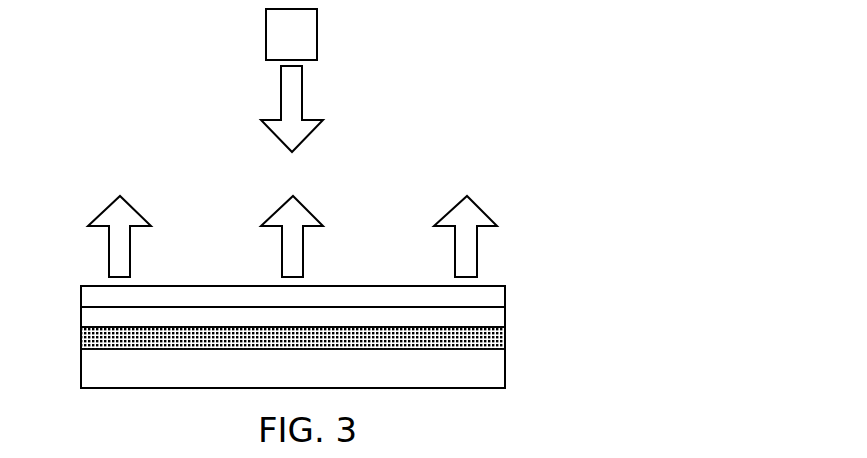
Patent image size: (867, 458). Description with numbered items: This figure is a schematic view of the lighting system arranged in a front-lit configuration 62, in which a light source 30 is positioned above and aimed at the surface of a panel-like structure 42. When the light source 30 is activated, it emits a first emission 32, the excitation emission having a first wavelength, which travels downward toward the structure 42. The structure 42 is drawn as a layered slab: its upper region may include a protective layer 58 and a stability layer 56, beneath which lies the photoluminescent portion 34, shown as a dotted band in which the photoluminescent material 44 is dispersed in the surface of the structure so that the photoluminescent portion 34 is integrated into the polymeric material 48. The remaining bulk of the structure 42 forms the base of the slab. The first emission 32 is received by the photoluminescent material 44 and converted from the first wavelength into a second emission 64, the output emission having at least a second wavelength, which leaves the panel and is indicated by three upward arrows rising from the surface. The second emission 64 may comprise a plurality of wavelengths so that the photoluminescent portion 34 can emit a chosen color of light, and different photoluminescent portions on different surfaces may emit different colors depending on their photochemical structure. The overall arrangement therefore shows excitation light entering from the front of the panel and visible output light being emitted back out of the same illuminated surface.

The light source 30 is at (291, 34).
The first emission 32 is at (299, 99).
The photoluminescent portion 34 is at (58, 260).
The structure 42 is at (458, 383).
The photoluminescent material 44 is at (500, 338).
The polymeric material 48 is at (293, 338).
The stability layer 56 is at (498, 313).
The protective layer 58 is at (498, 297).
The front-lit configuration 62 is at (478, 59).
The second emission 64 is at (129, 252).